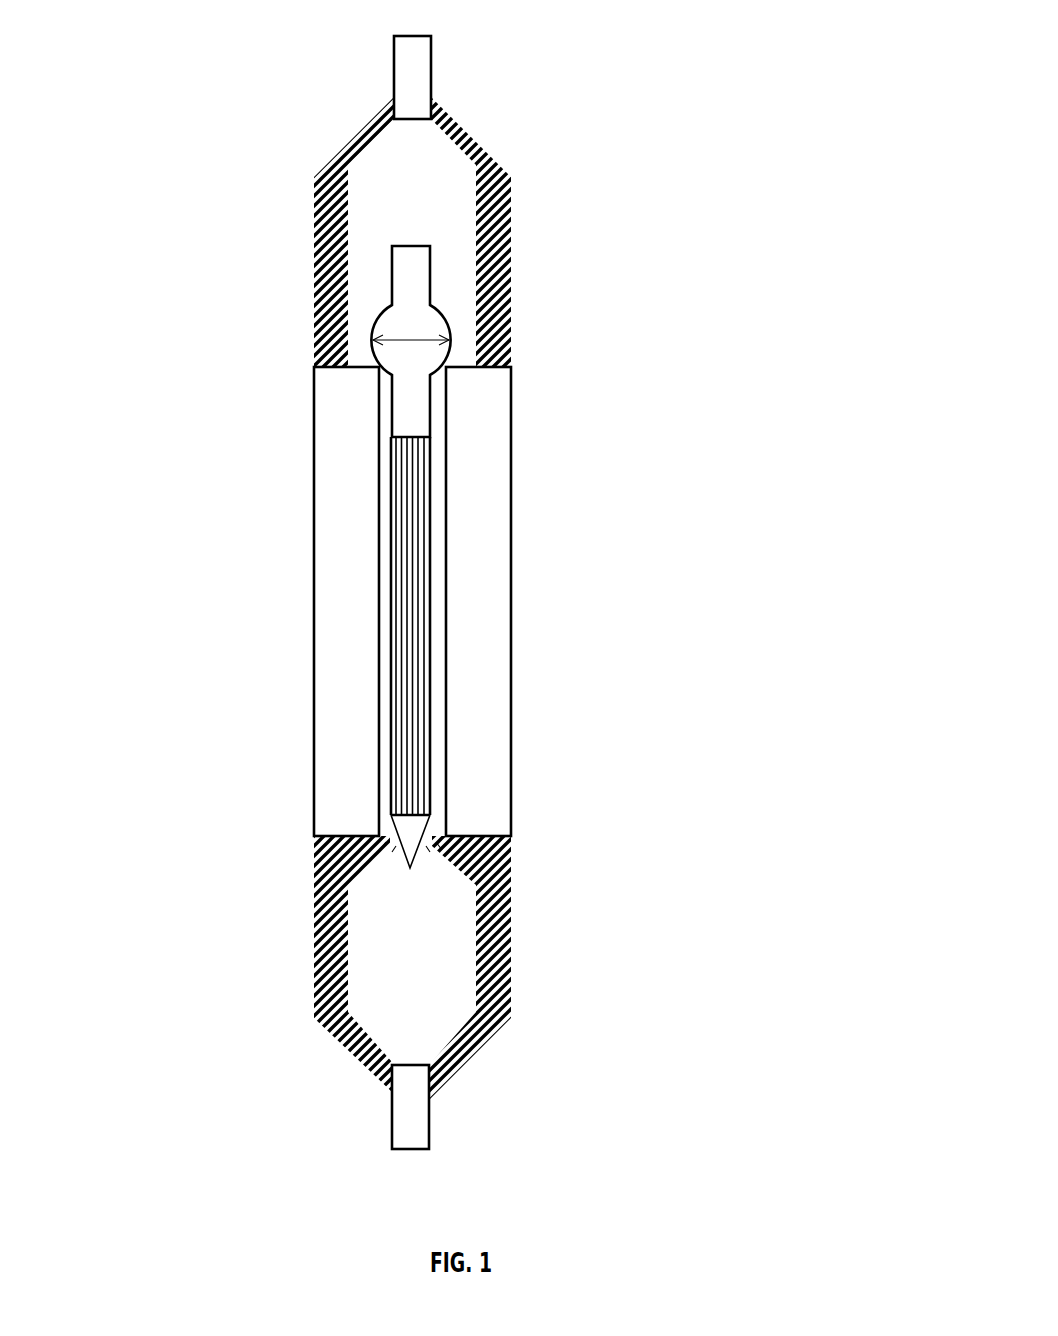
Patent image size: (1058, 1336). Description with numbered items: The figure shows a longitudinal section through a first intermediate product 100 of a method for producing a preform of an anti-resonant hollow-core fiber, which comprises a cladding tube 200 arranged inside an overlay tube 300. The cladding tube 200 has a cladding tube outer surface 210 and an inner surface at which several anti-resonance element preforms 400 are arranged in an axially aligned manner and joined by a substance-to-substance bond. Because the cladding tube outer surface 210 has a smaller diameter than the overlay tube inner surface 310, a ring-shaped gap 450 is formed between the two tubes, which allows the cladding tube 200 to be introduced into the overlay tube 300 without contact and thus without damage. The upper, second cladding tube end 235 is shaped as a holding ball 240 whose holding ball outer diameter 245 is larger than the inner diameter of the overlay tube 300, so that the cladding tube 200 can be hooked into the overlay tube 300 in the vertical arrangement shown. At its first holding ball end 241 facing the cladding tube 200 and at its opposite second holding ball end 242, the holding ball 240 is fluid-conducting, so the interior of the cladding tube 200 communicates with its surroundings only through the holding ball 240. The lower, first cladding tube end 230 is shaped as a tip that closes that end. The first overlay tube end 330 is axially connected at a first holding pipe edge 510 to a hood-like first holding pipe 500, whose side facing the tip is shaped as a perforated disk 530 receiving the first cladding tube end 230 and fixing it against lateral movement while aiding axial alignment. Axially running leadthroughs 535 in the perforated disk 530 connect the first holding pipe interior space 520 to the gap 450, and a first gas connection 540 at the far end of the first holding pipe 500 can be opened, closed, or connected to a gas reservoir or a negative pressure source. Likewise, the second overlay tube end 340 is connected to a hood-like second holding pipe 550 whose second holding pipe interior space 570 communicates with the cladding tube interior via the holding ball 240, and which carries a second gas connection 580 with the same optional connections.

The intermediate product 100 is at (693, 290).
The cladding tube 200 is at (447, 573).
The cladding tube outer surface 210 is at (430, 515).
The first cladding tube end 230 is at (420, 860).
The second cladding tube end 235 is at (442, 447).
The holding ball 240 is at (378, 322).
The first holding ball end 241 is at (423, 428).
The second holding ball end 242 is at (425, 238).
The holding ball outer diameter 245 is at (445, 333).
The overlay tube 300 is at (478, 693).
The overlay tube inner surface 310 is at (392, 614).
The first overlay tube end 330 is at (297, 833).
The second overlay tube end 340 is at (302, 387).
The anti-resonance element preforms 400 is at (400, 590).
The gap 450 is at (438, 787).
The first holding pipe 500 is at (340, 1042).
The first holding pipe edge 510 is at (312, 847).
The first holding pipe interior space 520 is at (432, 1021).
The perforated disk 530 is at (393, 868).
The leadthroughs 535 is at (435, 848).
The first gas connection 540 is at (387, 1132).
The second holding pipe 550 is at (340, 150).
The second holding pipe interior space 570 is at (377, 213).
The second gas connection 580 is at (434, 65).